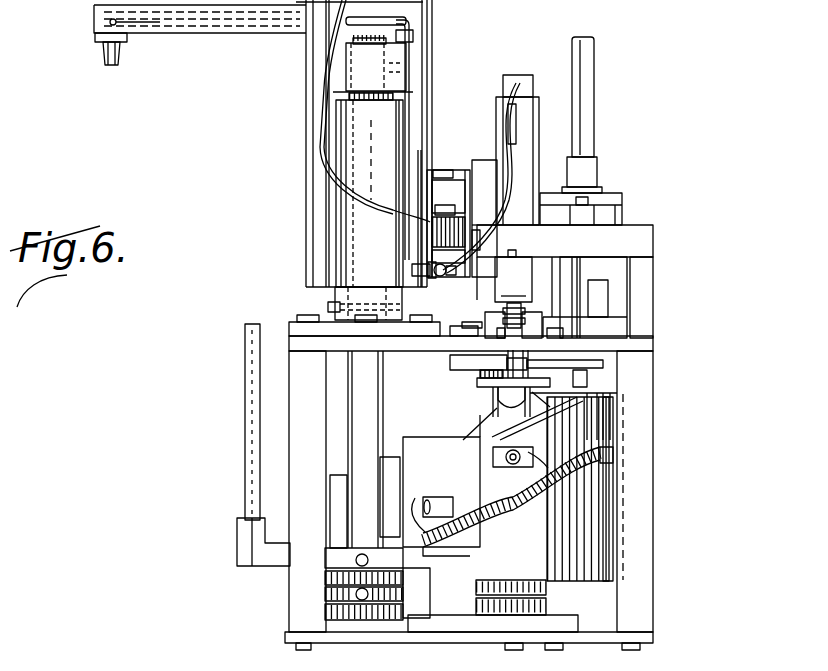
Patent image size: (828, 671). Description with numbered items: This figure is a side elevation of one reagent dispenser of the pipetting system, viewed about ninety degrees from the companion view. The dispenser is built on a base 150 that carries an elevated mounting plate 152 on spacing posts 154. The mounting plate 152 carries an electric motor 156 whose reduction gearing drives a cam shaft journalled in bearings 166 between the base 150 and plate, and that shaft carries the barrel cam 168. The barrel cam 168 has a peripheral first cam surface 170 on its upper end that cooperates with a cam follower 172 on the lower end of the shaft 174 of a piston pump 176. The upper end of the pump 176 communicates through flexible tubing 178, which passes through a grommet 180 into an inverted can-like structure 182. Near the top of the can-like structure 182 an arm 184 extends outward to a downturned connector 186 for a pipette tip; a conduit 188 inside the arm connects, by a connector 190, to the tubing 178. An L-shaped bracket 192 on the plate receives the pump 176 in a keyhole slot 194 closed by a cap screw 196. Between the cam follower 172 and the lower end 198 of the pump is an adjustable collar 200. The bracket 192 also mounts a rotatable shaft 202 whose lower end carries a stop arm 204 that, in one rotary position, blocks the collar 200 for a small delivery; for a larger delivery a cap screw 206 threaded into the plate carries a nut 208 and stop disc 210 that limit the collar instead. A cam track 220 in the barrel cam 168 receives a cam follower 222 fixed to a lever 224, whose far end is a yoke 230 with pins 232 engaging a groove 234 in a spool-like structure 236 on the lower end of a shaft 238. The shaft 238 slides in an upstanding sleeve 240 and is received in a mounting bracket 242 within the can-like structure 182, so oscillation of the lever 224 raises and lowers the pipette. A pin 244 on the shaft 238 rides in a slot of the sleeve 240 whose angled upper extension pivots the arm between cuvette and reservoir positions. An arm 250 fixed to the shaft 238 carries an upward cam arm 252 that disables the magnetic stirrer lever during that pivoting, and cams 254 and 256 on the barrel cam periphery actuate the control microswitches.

The base 150 is at (643, 641).
The mounting plate 152 is at (642, 346).
The spacing posts 154 is at (301, 381).
The electric motor 156 is at (433, 230).
The bearings 166 is at (556, 621).
The barrel cam 168 is at (603, 520).
The first cam surface 170 is at (415, 442).
The cam follower 172 is at (492, 412).
The shaft 174 is at (522, 310).
The piston pump 176 is at (540, 100).
The flexible tubing 178 is at (497, 106).
The grommet 180 is at (440, 277).
The can-like structure 182 is at (306, 232).
The arm 184 is at (203, 40).
The connector 186 is at (101, 55).
The conduit 188 is at (154, 22).
The connector 190 is at (413, 40).
The L-shaped bracket 192 is at (641, 246).
The keyhole slot 194 is at (517, 258).
The cap screw 196 is at (478, 183).
The lower end 198 is at (561, 294).
The adjustable collar 200 is at (533, 338).
The rotatable shaft 202 is at (583, 90).
The stop arm 204 is at (603, 366).
The cap screw 206 is at (477, 374).
The nut 208 is at (552, 409).
The stop disc 210 is at (476, 386).
The cam track 220 is at (527, 495).
The cam follower 222 is at (433, 501).
The lever 224 is at (432, 530).
The yoke 230 is at (441, 567).
The pins 232 is at (493, 596).
The groove 234 is at (325, 595).
The spool-like structure 236 is at (325, 579).
The shaft 238 is at (385, 448).
The sleeve 240 is at (343, 287).
The mounting bracket 242 is at (343, 80).
The pin 244 is at (328, 306).
The arm 250 is at (240, 546).
The cam arm 252 is at (250, 461).
The cam 254 is at (513, 459).
The cam 256 is at (530, 455).